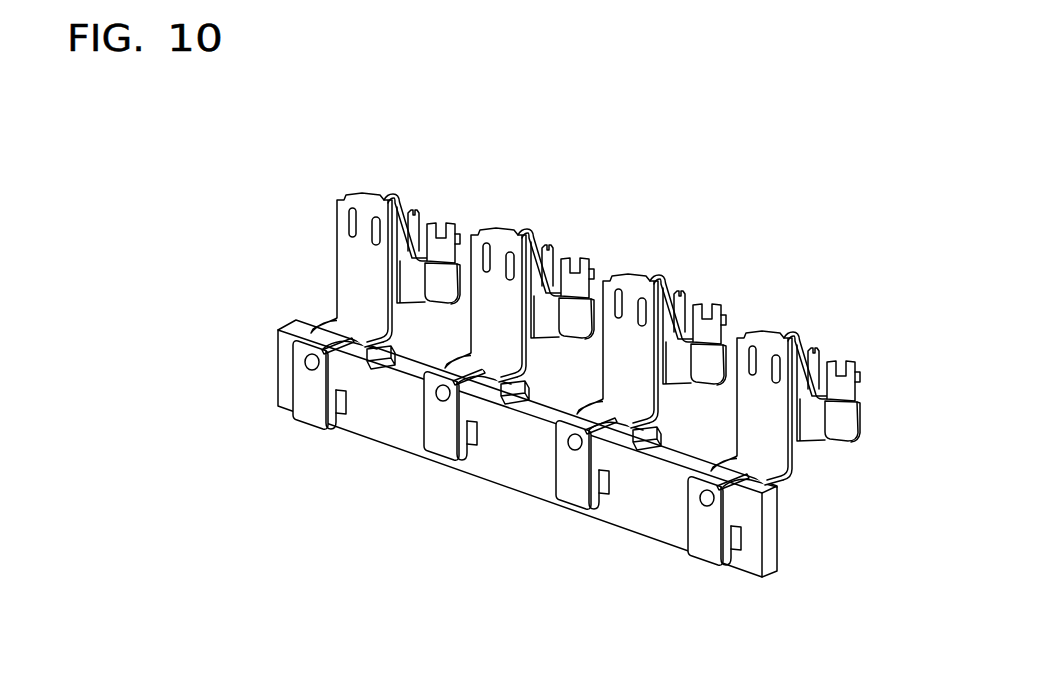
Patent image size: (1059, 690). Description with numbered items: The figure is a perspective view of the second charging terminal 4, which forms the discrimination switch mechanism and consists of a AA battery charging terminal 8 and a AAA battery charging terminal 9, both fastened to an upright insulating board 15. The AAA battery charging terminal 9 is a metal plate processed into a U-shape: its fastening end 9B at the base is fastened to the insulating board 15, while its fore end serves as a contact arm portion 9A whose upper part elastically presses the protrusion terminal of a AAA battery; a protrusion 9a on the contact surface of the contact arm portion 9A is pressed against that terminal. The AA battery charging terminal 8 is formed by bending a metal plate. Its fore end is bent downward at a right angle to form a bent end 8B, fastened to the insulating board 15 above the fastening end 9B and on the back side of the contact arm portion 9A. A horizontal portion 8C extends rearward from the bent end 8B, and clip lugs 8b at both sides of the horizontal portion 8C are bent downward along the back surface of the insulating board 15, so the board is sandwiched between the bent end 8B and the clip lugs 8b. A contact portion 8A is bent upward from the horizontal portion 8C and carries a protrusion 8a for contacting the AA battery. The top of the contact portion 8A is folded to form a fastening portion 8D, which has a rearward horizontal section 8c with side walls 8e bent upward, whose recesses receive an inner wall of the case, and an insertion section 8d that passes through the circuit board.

The second charging terminal 4 is at (188, 228).
The AA battery charging terminal 8 is at (526, 296).
The contact portion 8A is at (363, 203).
The protrusion 8a is at (347, 214).
The bent end 8B is at (327, 325).
The clip lugs 8b is at (320, 331).
The horizontal portion 8C is at (388, 340).
The horizontal section 8c is at (424, 225).
The fastening portion 8D is at (478, 231).
The insertion section 8d is at (440, 277).
The side walls 8e is at (410, 210).
The AAA battery charging terminal 9 is at (472, 455).
The contact arm portion 9A is at (293, 378).
The protrusion 9a is at (305, 362).
The fastening end 9B is at (335, 413).
The insulating board 15 is at (657, 507).